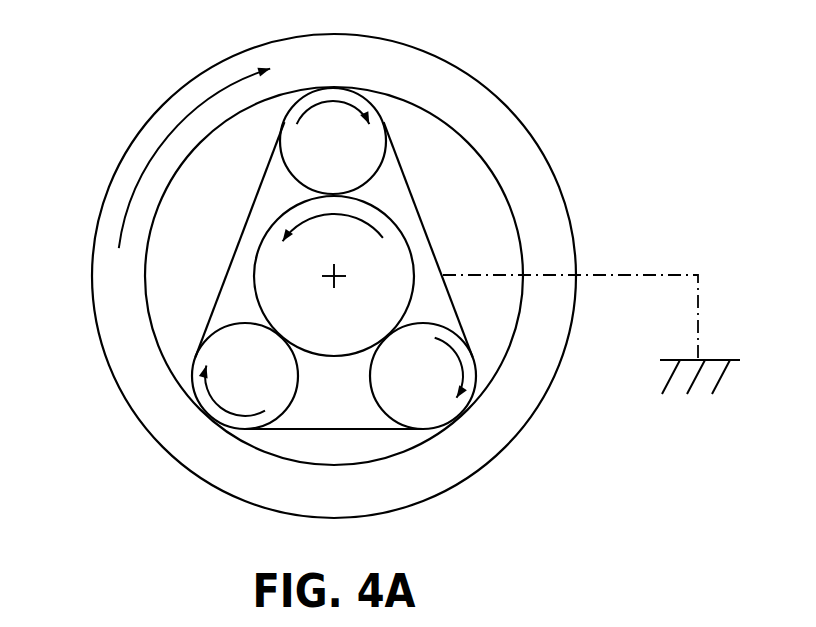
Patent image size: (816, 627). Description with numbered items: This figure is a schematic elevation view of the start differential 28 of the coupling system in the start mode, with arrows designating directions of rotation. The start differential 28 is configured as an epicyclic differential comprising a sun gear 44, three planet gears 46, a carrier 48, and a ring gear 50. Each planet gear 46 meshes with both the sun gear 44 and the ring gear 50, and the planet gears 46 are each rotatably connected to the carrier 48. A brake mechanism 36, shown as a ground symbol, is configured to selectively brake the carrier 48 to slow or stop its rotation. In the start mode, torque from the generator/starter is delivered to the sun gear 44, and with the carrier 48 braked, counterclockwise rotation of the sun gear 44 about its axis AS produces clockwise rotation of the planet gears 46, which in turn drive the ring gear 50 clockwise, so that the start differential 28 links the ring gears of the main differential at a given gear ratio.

The start differential 28 is at (575, 82).
The brake mechanism 36 is at (718, 360).
The sun gear 44 is at (316, 337).
The planet gears 46 is at (315, 155).
The carrier 48 is at (392, 192).
The ring gear 50 is at (538, 405).
The sun axis AS is at (326, 272).